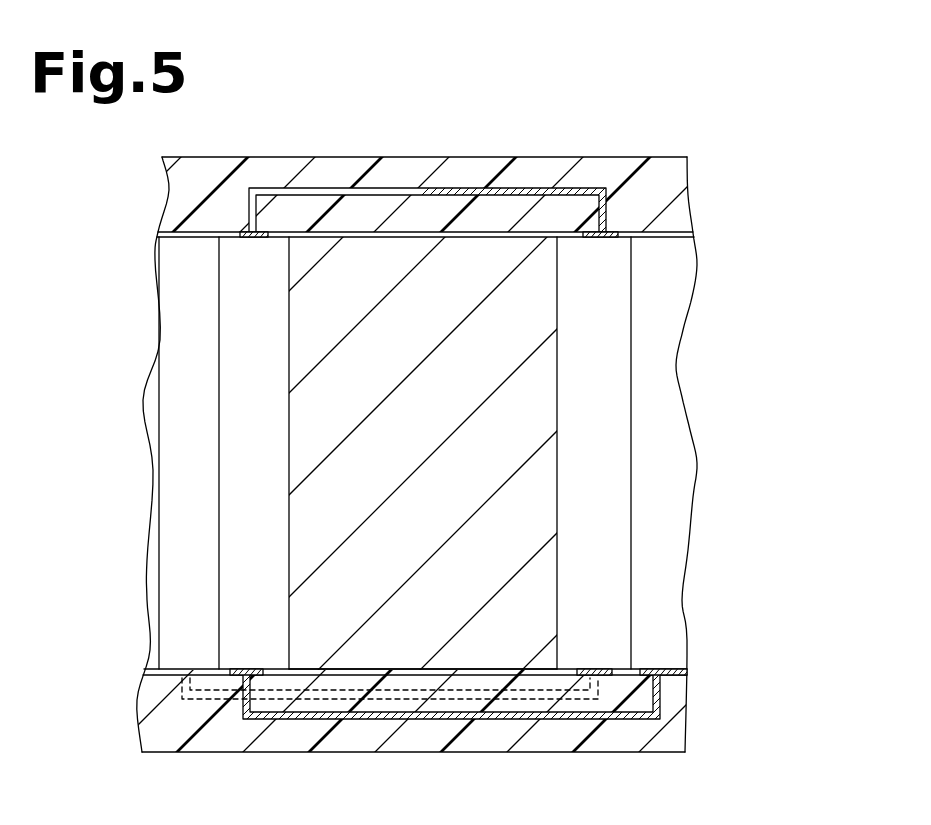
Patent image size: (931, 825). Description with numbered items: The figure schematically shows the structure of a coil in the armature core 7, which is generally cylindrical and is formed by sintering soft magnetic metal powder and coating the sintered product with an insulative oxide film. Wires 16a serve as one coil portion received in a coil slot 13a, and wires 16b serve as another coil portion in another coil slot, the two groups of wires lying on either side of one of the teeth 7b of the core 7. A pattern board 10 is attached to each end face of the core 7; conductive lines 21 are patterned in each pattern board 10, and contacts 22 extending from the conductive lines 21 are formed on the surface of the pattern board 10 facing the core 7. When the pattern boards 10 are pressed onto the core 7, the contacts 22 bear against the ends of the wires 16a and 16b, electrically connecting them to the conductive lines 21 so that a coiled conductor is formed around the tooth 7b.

The pattern board 10 is at (735, 131).
The conductive line 21 is at (437, 195).
The contact 22 is at (254, 238).
The coil slot 13a is at (167, 393).
The wire 16a is at (232, 433).
The wire 16b is at (621, 468).
The core 7 is at (679, 640).
The tooth 7b is at (349, 658).